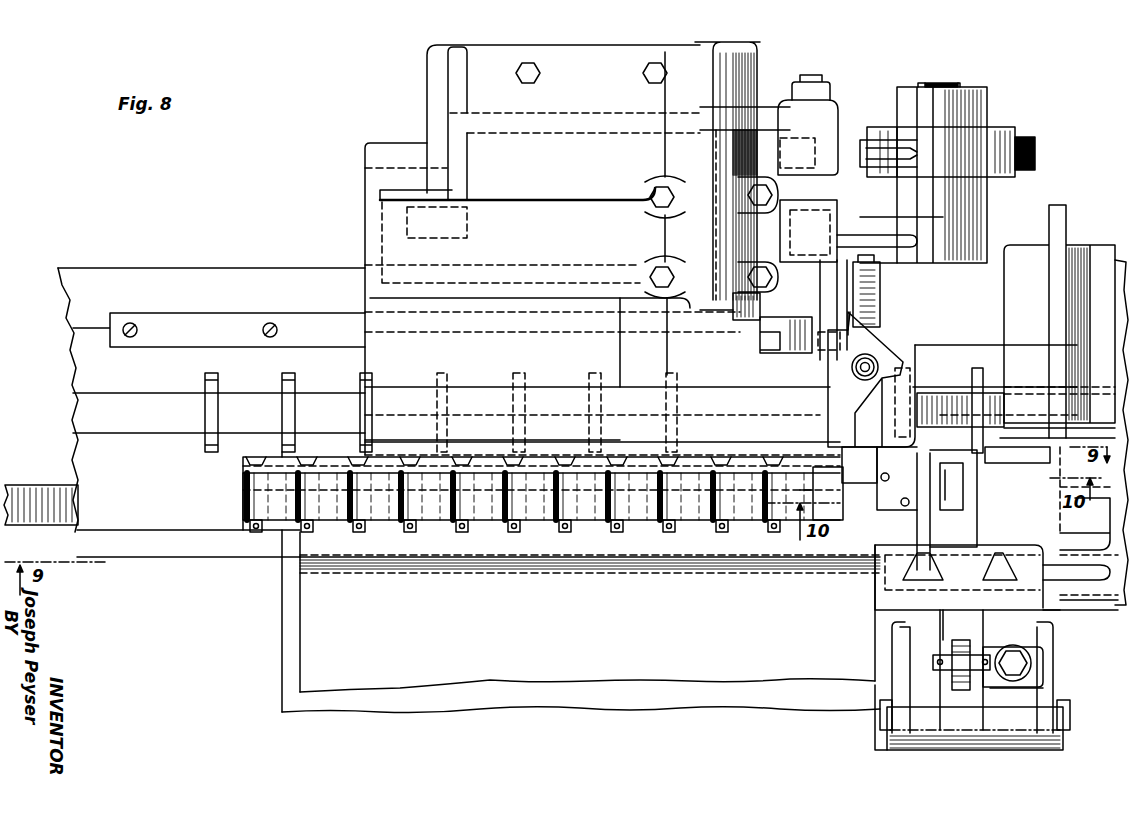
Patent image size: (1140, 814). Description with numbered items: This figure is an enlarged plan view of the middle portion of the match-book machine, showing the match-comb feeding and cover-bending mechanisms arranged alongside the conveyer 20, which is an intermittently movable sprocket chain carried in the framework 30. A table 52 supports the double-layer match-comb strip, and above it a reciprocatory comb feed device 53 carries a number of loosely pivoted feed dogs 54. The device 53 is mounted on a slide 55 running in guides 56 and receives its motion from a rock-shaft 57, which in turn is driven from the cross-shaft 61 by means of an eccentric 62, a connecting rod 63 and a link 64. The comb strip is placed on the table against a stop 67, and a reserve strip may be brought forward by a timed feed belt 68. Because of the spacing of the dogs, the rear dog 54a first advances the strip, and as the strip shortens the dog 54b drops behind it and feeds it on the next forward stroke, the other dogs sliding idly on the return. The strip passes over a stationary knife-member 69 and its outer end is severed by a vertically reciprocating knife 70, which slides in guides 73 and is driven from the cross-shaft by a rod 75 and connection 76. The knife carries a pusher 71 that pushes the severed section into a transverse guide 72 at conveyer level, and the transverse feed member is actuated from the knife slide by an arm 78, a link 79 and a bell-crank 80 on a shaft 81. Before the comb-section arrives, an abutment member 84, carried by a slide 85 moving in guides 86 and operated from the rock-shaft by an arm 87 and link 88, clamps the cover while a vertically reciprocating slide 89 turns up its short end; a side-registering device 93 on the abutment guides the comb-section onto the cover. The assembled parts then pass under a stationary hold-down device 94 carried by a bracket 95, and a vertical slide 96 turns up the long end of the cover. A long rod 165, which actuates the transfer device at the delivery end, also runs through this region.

The conveyer 20 is at (205, 406).
The framework 30 is at (175, 275).
The table 52 is at (590, 543).
The comb feed device 53 is at (243, 462).
The feed dogs 54 is at (478, 525).
The rear dog 54a is at (243, 490).
The dog 54b is at (333, 512).
The slide 55 is at (405, 420).
The guides 56 is at (380, 440).
The rock-shaft 57 is at (705, 45).
The cross-shaft 61 is at (937, 82).
The eccentric 62 is at (1003, 132).
The connecting rod 63 is at (855, 148).
The link 64 is at (763, 112).
The stop 67 is at (297, 455).
The feed belt 68 is at (581, 621).
The stationary knife-member 69 is at (879, 472).
The knife 70 is at (905, 500).
The pusher 71 is at (963, 478).
The guide 72 is at (952, 455).
The guides 73 is at (1005, 545).
The rod 75 is at (1030, 660).
The connection 76 is at (990, 688).
The arm 78 is at (950, 630).
The link 79 is at (963, 690).
The bell-crank 80 is at (975, 745).
The shaft 81 is at (887, 722).
The abutment member 84 is at (905, 355).
The slide 85 is at (900, 345).
The guides 86 is at (880, 292).
The arm 87 is at (777, 325).
The link 88 is at (775, 345).
The vertically reciprocating slide 89 is at (895, 315).
The side-registering device 93 is at (935, 355).
The hold-down device 94 is at (1000, 400).
The bracket 95 is at (1064, 405).
The vertical slide 96 is at (1005, 450).
The rod 165 is at (40, 495).